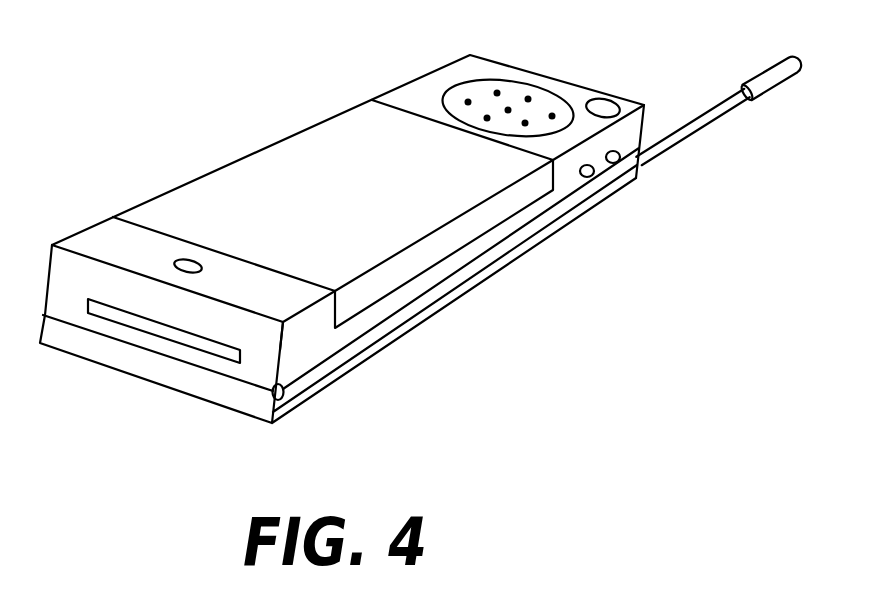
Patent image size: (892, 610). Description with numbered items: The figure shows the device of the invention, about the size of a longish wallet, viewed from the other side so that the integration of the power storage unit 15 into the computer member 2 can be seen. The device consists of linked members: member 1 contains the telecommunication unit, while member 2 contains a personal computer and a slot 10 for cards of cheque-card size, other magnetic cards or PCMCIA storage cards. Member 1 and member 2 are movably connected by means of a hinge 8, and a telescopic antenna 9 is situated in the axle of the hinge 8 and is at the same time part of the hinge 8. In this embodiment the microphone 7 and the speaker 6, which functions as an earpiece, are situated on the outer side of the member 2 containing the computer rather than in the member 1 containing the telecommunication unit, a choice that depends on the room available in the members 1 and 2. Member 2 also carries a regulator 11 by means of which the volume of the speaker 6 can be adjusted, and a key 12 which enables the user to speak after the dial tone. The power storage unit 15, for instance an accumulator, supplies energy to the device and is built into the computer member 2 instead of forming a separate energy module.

The member 1 is at (97, 343).
The member 2 is at (63, 307).
The speaker 6 is at (510, 102).
The microphone 7 is at (189, 262).
The hinge 8 is at (275, 399).
The telescopic antenna 9 is at (765, 89).
The slot 10 is at (183, 338).
The regulator 11 is at (620, 155).
The key 12 is at (589, 176).
The power storage unit 15 is at (350, 209).